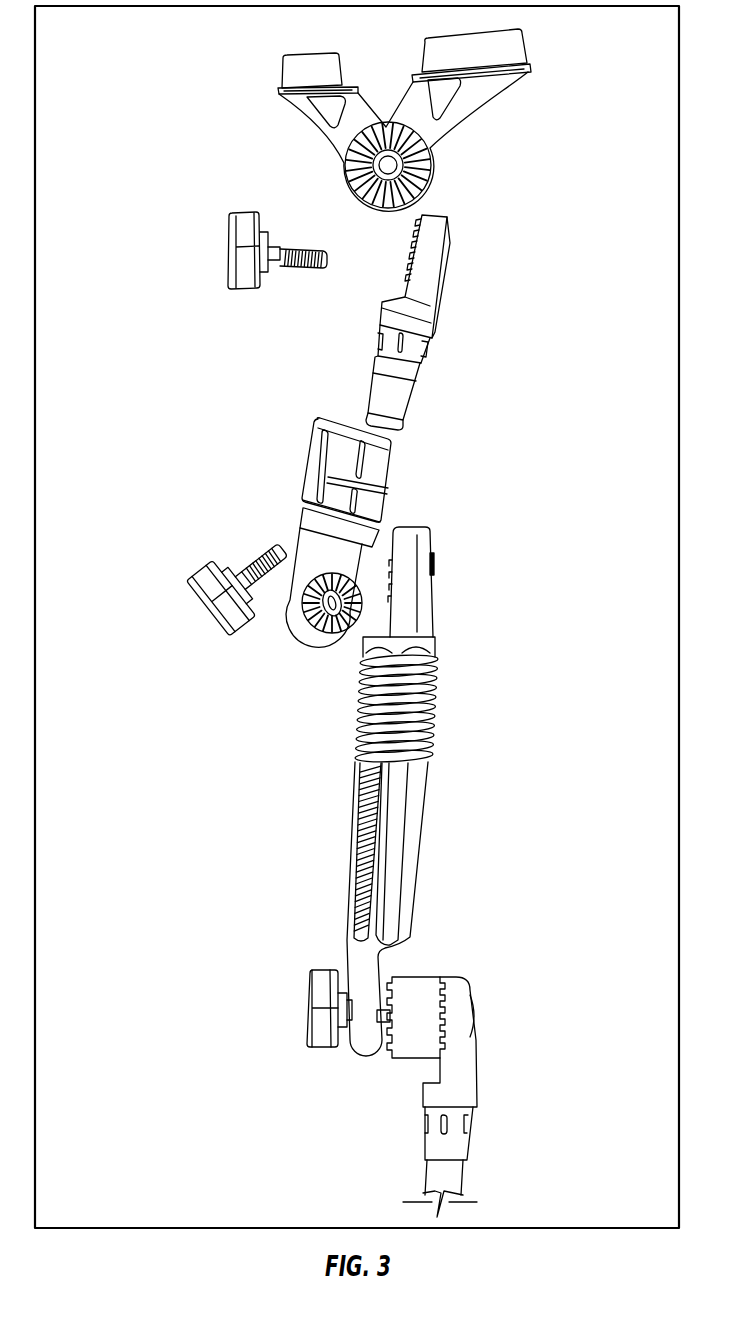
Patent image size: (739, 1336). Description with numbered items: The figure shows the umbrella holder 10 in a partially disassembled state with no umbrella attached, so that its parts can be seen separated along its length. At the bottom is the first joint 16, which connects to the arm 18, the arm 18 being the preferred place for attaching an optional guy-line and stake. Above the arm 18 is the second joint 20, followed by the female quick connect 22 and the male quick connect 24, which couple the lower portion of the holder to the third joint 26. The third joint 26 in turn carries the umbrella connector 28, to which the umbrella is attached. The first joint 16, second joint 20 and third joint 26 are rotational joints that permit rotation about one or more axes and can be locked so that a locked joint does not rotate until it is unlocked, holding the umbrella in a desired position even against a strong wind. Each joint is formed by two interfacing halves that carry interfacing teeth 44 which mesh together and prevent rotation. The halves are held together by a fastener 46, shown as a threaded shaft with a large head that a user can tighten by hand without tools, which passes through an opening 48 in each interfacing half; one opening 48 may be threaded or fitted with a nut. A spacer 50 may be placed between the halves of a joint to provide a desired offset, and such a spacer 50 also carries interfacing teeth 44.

The umbrella holder 10 is at (156, 99).
The first joint 16 is at (488, 1021).
The arm 18 is at (408, 875).
The second joint 20 is at (445, 557).
The female quick connect 22 is at (382, 455).
The male quick connect 24 is at (407, 393).
The third joint 26 is at (470, 254).
The umbrella connector 28 is at (512, 43).
The interfacing teeth 44 is at (348, 177).
The fastener 46 is at (237, 217).
The opening 48 is at (392, 158).
The spacer 50 is at (405, 1052).